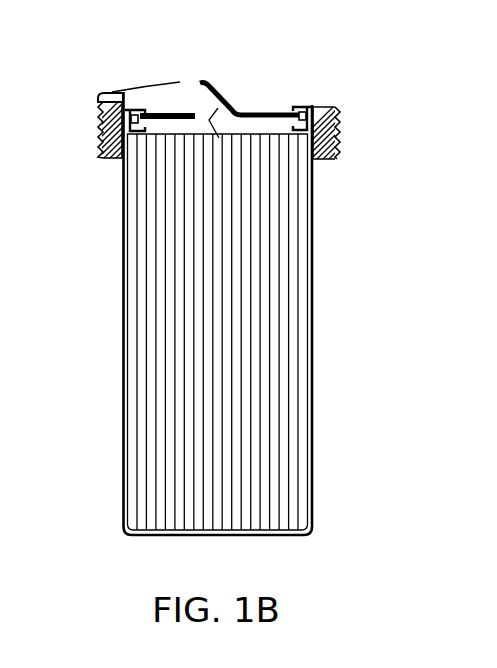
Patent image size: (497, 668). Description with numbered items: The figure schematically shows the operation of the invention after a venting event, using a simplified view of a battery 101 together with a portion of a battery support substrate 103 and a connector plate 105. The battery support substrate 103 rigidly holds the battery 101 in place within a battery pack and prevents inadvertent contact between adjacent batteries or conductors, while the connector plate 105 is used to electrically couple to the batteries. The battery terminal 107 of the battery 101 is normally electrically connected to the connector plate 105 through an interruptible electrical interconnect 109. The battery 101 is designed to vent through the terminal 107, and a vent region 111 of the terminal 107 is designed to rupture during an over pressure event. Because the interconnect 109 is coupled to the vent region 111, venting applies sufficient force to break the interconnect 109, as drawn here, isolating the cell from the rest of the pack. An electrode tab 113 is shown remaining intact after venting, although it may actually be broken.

The battery 101 is at (319, 358).
The battery support substrate 103 is at (104, 159).
The connector plate 105 is at (108, 95).
The battery terminal 107 is at (284, 111).
The interruptible electrical interconnect 109 is at (160, 83).
The vent region 111 is at (241, 101).
The electrode tab 113 is at (212, 122).